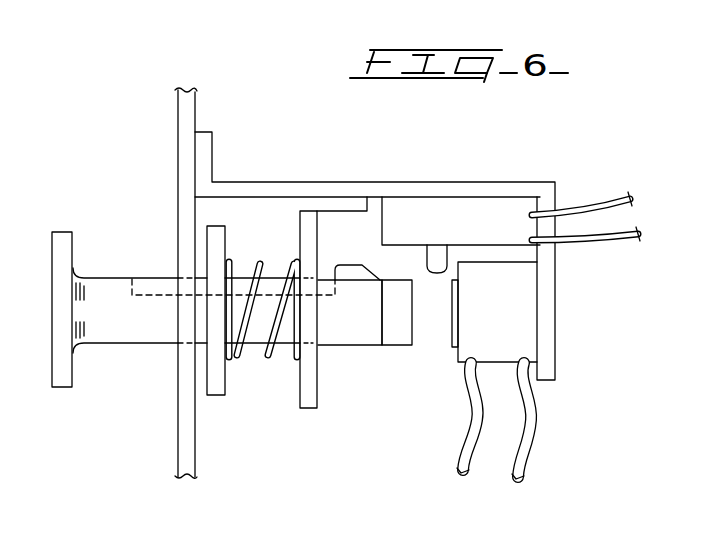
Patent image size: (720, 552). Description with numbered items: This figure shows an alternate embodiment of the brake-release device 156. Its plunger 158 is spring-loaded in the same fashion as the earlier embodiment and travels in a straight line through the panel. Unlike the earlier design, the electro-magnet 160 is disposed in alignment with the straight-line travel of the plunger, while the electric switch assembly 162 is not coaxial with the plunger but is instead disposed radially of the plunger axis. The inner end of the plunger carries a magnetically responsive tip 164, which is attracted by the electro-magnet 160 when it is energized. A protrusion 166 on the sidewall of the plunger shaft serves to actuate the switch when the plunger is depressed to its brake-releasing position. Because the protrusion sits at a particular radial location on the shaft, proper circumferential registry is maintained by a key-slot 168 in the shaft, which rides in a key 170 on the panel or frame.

The device 156 is at (578, 181).
The plunger 158 is at (110, 278).
The electro-magnet 160 is at (521, 316).
The electric switch assembly 162 is at (432, 210).
The magnetically responsive tip 164 is at (390, 347).
The protrusion 166 is at (348, 272).
The key-slot 168 is at (160, 292).
The key 170 is at (184, 293).